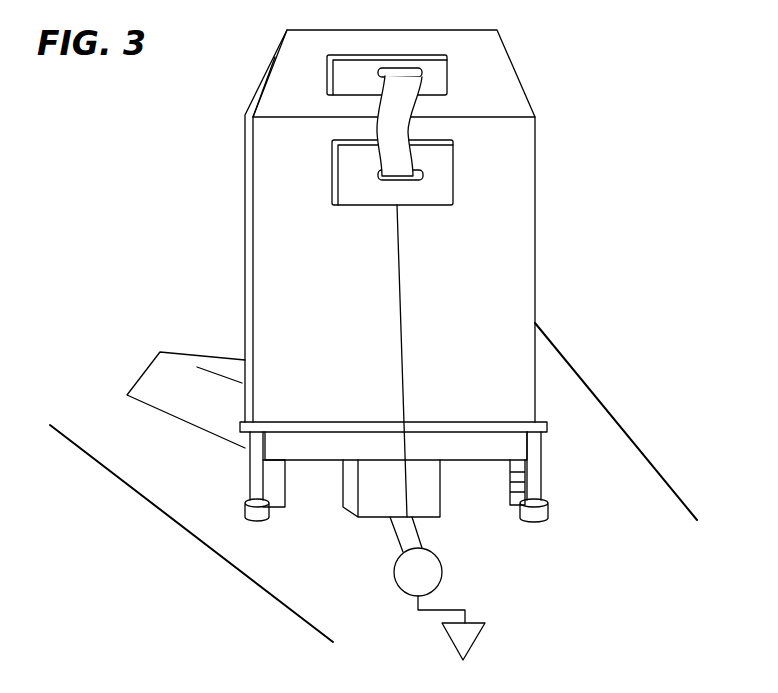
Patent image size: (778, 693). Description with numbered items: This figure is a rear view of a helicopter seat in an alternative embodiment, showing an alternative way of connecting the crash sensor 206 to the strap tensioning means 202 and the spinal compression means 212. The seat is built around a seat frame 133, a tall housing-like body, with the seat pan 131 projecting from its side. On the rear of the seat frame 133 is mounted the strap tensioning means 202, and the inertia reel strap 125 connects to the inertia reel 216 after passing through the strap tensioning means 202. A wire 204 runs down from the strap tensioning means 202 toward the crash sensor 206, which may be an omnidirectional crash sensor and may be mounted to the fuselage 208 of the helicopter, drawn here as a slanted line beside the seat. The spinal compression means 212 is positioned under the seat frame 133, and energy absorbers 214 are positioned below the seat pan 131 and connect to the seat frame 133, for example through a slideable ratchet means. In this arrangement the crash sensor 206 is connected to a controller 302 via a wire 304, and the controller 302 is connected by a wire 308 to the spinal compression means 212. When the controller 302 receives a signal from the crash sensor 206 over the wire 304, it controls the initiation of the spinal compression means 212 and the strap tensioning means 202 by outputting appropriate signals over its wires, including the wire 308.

The inertia reel strap 125 is at (409, 132).
The seat pan 131 is at (195, 403).
The seat frame 133 is at (522, 220).
The strap tensioning means 202 is at (455, 185).
The wire 204 is at (401, 303).
The crash sensor 206 is at (466, 640).
The fuselage 208 is at (657, 490).
The spinal compression means 212 is at (350, 513).
The energy absorbers 214 is at (286, 463).
The inertia reel 216 is at (448, 82).
The controller 302 is at (430, 567).
The wire 304 is at (452, 607).
The wire 308 is at (417, 535).